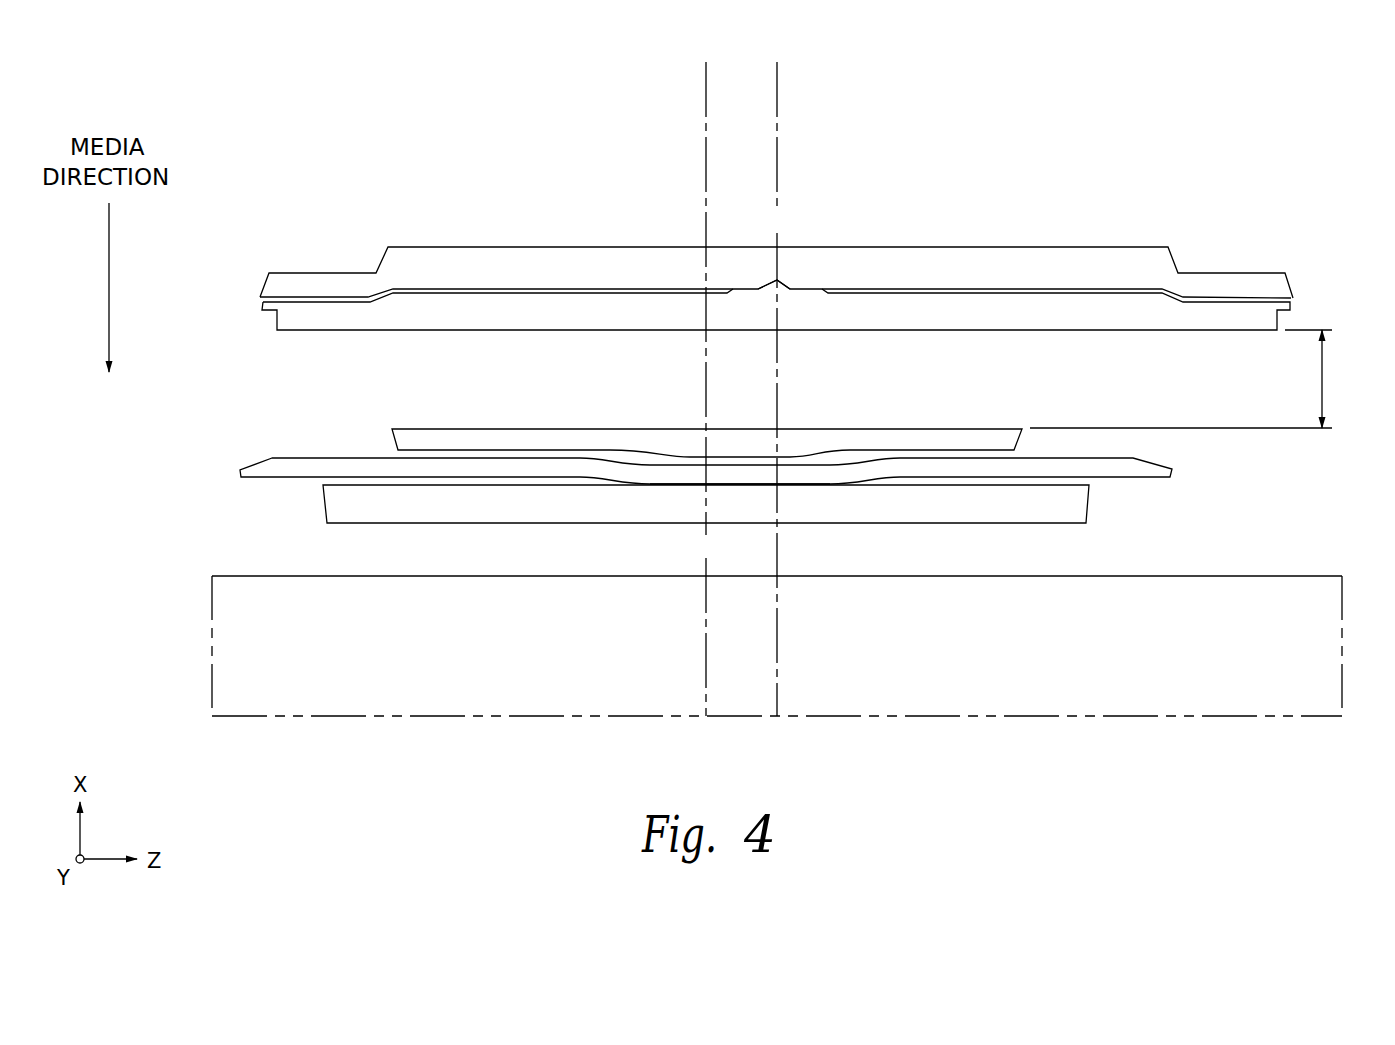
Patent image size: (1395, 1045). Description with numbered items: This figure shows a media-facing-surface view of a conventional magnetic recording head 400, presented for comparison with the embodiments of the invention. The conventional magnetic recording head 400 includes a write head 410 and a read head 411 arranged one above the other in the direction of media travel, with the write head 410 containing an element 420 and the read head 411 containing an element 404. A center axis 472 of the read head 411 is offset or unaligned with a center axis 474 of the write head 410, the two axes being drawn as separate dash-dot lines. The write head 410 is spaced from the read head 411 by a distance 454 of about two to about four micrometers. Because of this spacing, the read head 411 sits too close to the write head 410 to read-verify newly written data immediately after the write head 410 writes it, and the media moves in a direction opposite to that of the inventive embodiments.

The conventional magnetic recording head 400 is at (230, 98).
The write head 410 is at (330, 255).
The read head 411 is at (342, 442).
The write element 420 is at (777, 280).
The read element 404 is at (706, 484).
The center axis of the read head 472 is at (706, 94).
The center axis of the write head 474 is at (777, 95).
The distance 454 is at (1325, 380).